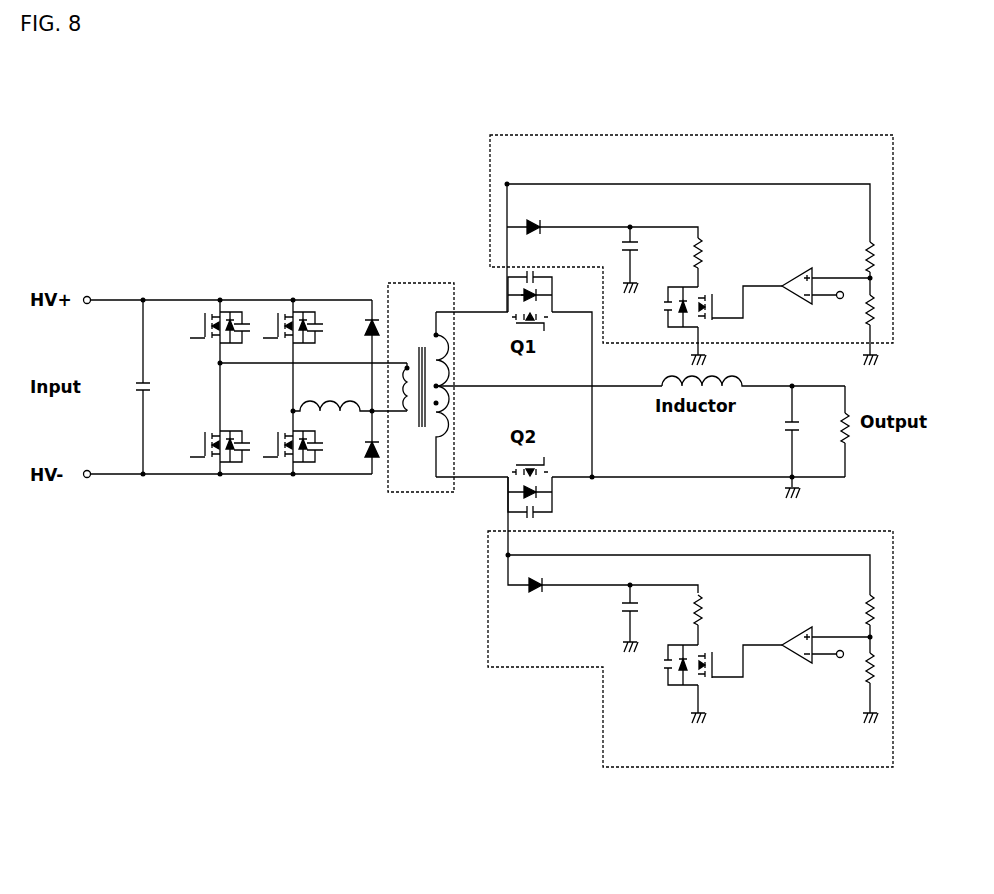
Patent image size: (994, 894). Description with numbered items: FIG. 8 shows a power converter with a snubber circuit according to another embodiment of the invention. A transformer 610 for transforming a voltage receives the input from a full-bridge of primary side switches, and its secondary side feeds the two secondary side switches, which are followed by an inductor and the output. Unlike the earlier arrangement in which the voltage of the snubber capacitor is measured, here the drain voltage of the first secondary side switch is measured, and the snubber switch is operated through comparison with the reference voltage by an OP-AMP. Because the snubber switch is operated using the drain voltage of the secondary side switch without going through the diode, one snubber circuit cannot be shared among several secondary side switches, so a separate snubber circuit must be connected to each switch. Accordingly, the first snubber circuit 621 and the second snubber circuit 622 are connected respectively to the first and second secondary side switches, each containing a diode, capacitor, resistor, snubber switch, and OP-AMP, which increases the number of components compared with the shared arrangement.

The transformer 610 is at (418, 492).
The snubber circuit 621 is at (757, 134).
The snubber circuit 622 is at (876, 531).